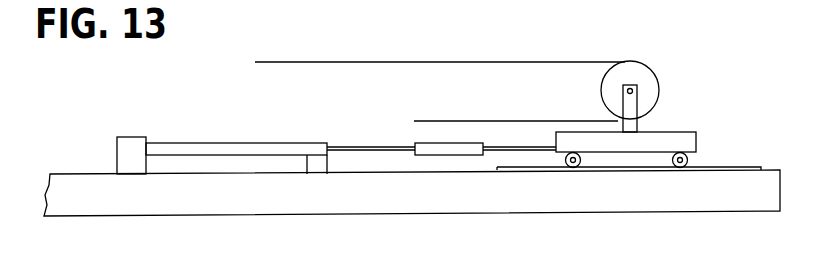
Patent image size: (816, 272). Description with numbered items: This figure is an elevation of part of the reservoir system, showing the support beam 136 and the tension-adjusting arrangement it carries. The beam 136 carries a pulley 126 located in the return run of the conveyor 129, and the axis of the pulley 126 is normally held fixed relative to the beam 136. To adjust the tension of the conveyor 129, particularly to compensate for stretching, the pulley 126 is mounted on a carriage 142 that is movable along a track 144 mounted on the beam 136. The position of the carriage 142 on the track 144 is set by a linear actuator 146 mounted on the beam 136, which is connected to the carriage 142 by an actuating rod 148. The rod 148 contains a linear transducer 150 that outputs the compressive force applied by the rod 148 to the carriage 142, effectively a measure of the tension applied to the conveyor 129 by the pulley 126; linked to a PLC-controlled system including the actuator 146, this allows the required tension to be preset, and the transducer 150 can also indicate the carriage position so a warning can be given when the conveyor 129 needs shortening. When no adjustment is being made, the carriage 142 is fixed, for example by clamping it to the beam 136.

The pulley 126 is at (649, 78).
The conveyor 129 is at (463, 62).
The beam 136 is at (591, 198).
The carriage 142 is at (677, 130).
The track 144 is at (742, 165).
The linear actuator 146 is at (197, 150).
The actuating rod 148 is at (367, 146).
The linear transducer 150 is at (452, 148).